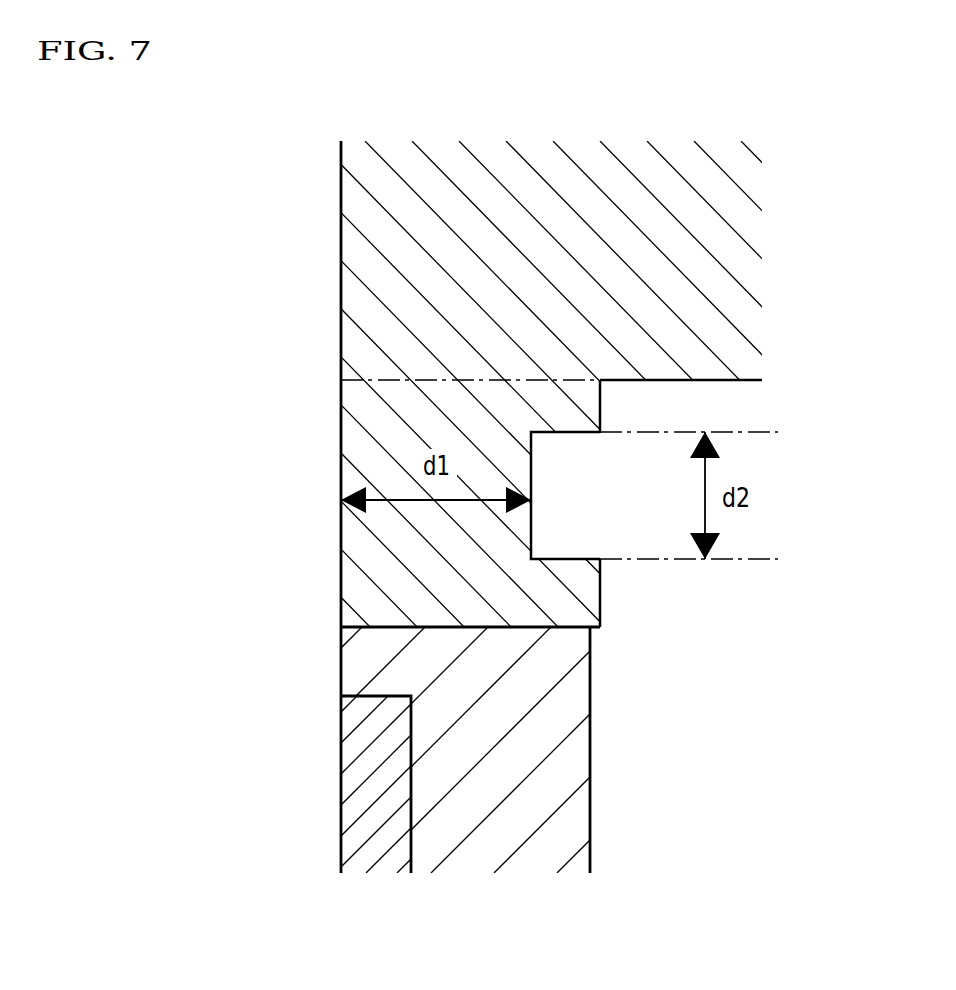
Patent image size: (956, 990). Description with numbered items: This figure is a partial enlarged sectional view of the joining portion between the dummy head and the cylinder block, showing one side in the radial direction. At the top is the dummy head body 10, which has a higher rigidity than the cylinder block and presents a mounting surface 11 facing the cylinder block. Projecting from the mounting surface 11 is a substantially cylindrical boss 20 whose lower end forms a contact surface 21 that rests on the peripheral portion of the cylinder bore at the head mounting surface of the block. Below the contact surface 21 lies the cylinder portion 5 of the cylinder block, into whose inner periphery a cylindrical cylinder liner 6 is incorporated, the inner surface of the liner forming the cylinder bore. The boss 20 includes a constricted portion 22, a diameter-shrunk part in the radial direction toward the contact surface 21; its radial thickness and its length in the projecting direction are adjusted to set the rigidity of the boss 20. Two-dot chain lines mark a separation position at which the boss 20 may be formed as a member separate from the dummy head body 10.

The cylinder portion 5 is at (590, 812).
The cylinder liner 6 is at (341, 766).
The dummy head body 10 is at (340, 241).
The mounting surface 11 is at (738, 381).
The boss 20 is at (340, 538).
The contact surface 21 is at (497, 628).
The constricted portion 22 is at (531, 468).